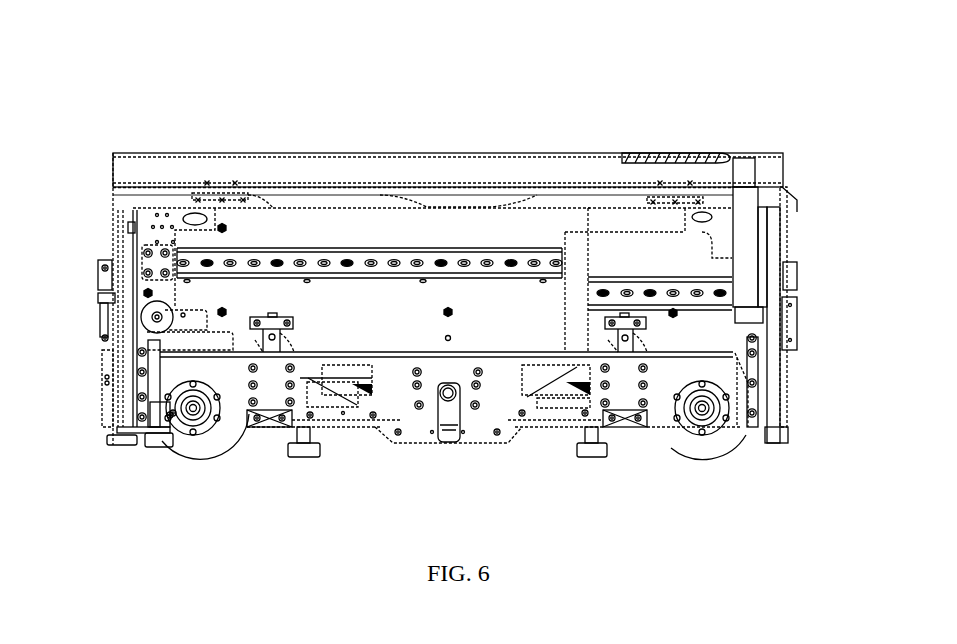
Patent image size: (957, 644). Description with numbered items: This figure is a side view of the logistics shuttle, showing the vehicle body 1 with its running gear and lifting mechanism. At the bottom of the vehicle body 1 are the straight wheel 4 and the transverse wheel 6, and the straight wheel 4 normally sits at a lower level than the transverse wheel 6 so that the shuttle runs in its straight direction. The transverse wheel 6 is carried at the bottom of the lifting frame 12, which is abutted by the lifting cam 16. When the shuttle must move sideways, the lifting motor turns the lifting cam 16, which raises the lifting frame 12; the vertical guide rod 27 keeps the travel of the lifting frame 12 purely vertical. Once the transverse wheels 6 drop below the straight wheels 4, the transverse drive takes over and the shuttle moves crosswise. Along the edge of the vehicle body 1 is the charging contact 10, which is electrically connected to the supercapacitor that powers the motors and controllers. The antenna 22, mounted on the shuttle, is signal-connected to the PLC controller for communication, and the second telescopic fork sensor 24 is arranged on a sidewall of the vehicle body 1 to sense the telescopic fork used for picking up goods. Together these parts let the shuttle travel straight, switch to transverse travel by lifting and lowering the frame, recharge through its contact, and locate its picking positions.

The vehicle body 1 is at (122, 212).
The straight wheel 4 is at (772, 442).
The transverse wheel 6 is at (733, 447).
The charging contact 10 is at (624, 413).
The lifting frame 12 is at (500, 380).
The lifting cam 16 is at (446, 390).
The antenna 22 is at (733, 160).
The second telescopic fork sensor 24 is at (106, 263).
The vertical guide rod 27 is at (622, 332).